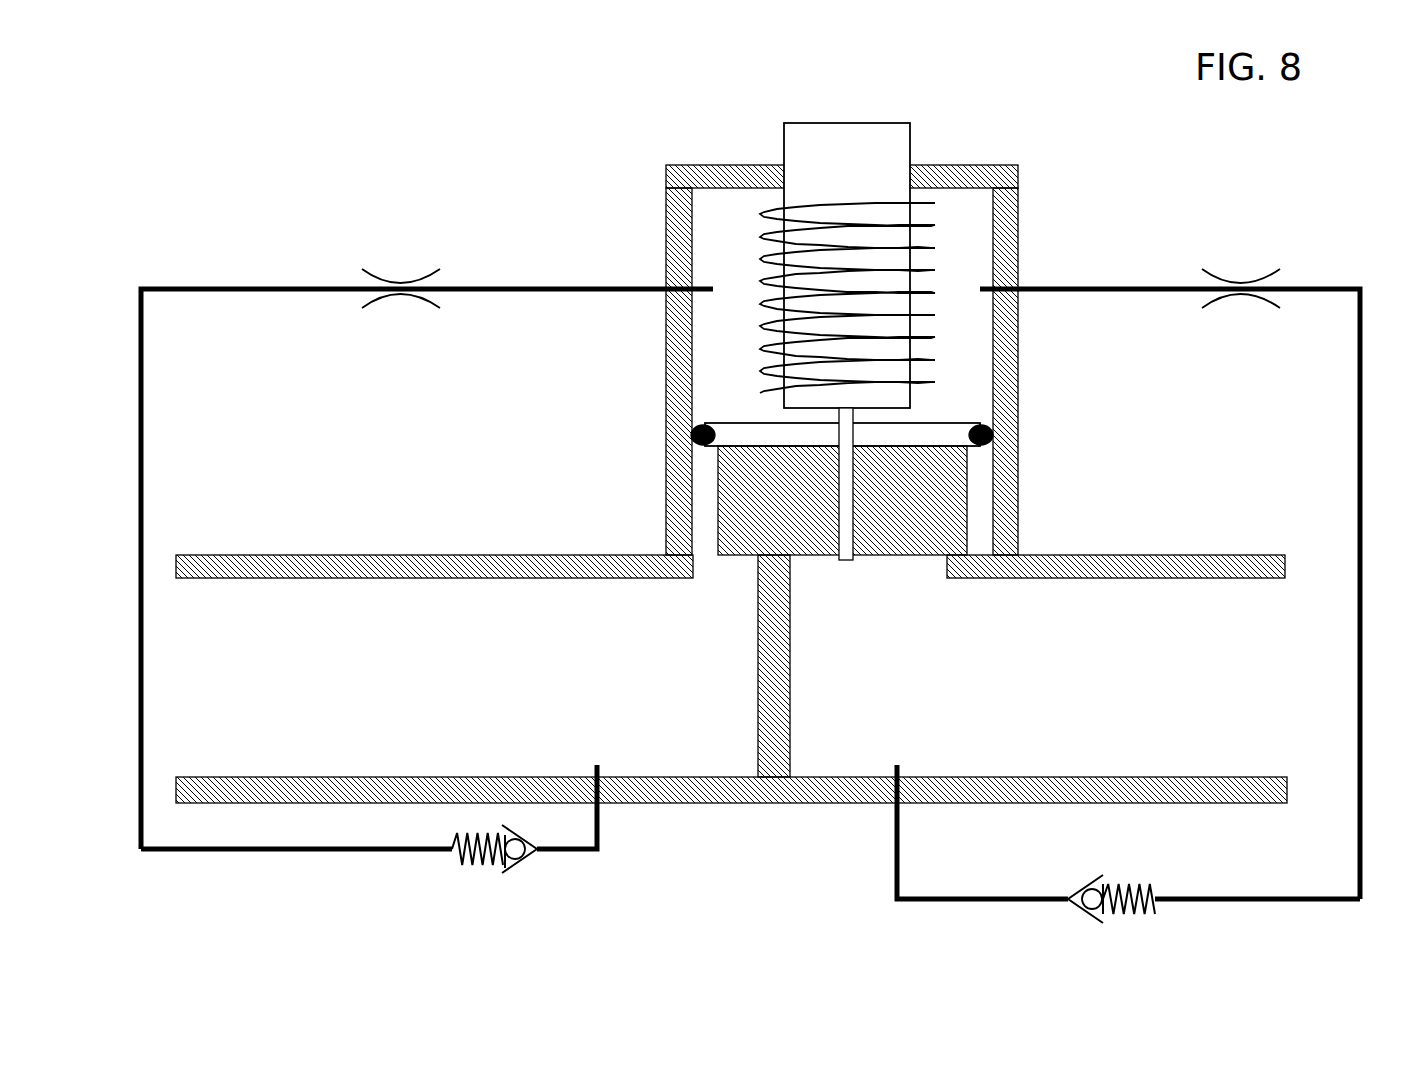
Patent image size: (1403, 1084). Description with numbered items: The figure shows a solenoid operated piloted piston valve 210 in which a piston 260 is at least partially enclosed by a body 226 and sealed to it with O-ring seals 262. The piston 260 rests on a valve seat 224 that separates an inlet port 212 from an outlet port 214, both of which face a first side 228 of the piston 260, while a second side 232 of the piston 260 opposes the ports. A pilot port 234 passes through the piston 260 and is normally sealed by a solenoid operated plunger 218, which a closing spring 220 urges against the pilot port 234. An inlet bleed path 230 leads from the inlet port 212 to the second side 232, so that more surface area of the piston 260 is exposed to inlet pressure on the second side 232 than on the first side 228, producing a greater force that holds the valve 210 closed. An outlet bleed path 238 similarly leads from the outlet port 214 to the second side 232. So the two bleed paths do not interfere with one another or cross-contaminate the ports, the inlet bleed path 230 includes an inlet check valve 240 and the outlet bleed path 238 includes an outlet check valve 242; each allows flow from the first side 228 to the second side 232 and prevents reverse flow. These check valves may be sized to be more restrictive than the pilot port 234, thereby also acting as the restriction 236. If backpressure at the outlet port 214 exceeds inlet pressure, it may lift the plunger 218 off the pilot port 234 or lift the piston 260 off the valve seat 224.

The solenoid operated piloted piston valve 210 is at (325, 123).
The inlet port 212 is at (249, 687).
The outlet port 214 is at (1148, 683).
The solenoid operated plunger 218 is at (860, 160).
The closing spring 220 is at (943, 227).
The valve seat 224 is at (800, 573).
The body 226 is at (677, 207).
The first side of the piston 228 is at (720, 577).
The inlet bleed path 230 is at (317, 850).
The second side of the piston 232 is at (980, 400).
The pilot port 234 is at (847, 512).
The restriction 236 is at (413, 267).
The outlet bleed path 238 is at (1358, 427).
The inlet check valve 240 is at (540, 868).
The outlet check valve 242 is at (1165, 878).
The piston 260 is at (750, 485).
The O-ring seals 262 is at (995, 442).